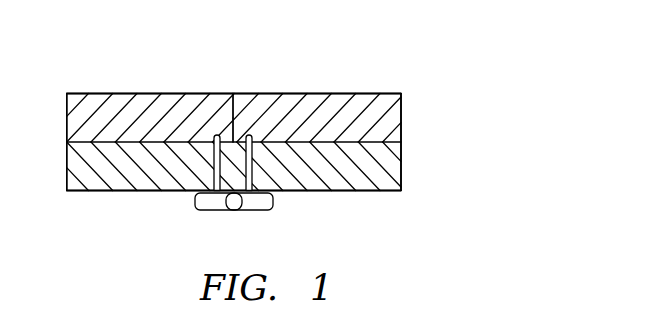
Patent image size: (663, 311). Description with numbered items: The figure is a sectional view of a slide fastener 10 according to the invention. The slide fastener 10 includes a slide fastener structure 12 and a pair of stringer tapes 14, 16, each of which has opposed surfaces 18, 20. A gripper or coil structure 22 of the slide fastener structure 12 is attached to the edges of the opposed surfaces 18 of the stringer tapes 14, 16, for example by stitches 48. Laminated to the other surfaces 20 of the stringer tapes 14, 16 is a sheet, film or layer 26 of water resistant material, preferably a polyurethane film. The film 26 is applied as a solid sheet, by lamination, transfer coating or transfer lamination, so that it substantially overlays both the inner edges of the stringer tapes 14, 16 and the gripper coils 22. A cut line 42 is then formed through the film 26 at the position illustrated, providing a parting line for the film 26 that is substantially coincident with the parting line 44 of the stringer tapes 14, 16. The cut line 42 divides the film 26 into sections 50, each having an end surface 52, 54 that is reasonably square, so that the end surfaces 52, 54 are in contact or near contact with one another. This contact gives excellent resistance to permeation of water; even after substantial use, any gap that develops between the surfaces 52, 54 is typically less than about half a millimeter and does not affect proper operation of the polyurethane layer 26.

The slide fastener 10 is at (455, 62).
The slide fastener structure 12 is at (392, 218).
The stringer tape 14 is at (114, 184).
The stringer tape 16 is at (319, 184).
The opposed surface 18 is at (168, 191).
The opposed surface 20 is at (150, 133).
The gripper or coil structure 22 is at (209, 211).
The water resistant film 26 is at (95, 103).
The cut line 42 is at (233, 94).
The parting line 44 is at (252, 162).
The stitches 48 is at (213, 177).
The film sections 50 is at (171, 85).
The end surface 52 is at (225, 111).
The end surface 54 is at (242, 122).